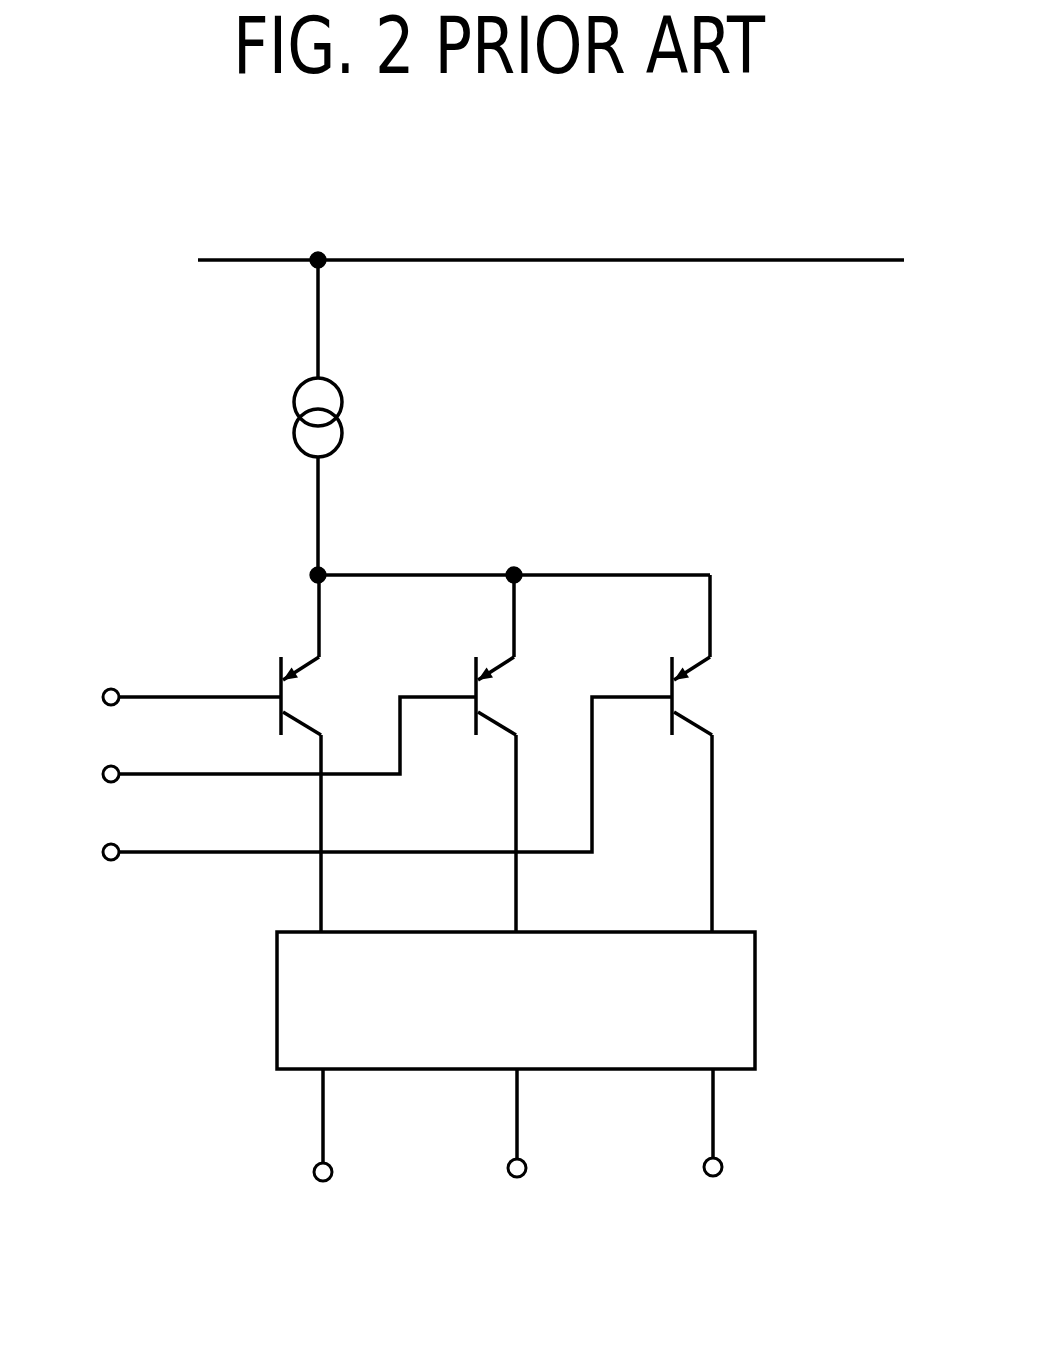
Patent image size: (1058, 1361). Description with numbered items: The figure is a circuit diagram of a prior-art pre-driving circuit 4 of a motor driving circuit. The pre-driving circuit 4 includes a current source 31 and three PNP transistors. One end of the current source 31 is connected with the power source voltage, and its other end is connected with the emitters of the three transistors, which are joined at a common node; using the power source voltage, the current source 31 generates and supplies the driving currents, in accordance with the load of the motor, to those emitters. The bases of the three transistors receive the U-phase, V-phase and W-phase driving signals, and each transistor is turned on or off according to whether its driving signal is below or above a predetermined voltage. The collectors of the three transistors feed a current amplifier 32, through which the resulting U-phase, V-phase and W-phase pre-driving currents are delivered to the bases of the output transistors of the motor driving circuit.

The pre-driving circuit 4 is at (100, 168).
The current source 31 is at (344, 418).
The current amplifier 32 is at (277, 1005).